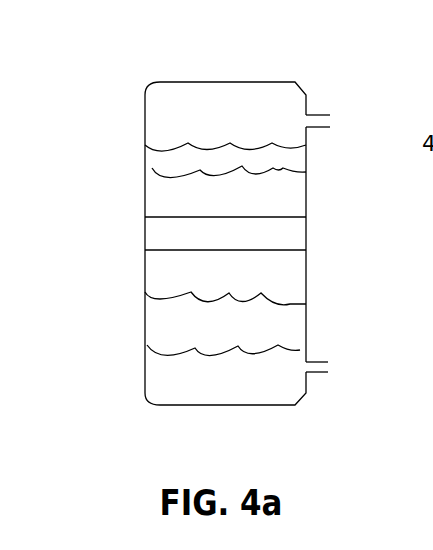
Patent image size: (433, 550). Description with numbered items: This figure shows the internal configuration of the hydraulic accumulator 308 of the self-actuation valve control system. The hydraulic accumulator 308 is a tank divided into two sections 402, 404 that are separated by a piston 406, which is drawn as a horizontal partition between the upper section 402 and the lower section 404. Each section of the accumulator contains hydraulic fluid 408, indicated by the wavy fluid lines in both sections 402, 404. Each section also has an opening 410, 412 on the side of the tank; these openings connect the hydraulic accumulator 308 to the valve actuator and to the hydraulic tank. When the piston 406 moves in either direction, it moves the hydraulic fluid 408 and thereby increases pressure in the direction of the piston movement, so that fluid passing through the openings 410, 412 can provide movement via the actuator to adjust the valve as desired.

The hydraulic accumulator 308 is at (226, 80).
The section 402 is at (157, 183).
The section 404 is at (167, 317).
The piston 406 is at (293, 240).
The hydraulic fluid 408 is at (306, 172).
The opening 410 is at (315, 115).
The opening 412 is at (320, 372).